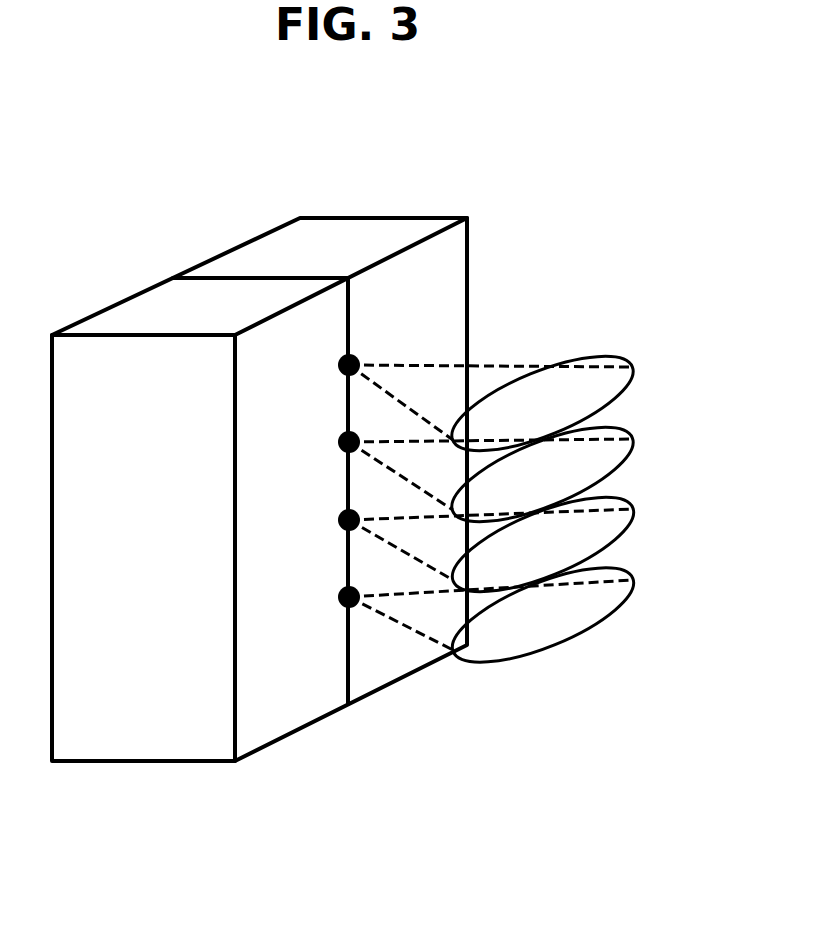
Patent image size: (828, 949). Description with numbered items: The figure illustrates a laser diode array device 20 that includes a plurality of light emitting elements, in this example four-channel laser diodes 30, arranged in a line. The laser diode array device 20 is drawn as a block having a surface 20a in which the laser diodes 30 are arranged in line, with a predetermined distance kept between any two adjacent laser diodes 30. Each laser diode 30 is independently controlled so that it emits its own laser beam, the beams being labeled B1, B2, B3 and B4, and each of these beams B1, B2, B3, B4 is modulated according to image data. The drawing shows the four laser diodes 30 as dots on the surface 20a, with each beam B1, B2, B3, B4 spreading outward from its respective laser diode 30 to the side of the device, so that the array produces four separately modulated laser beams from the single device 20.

The laser diode array device 20 is at (428, 196).
The surface 20a is at (307, 697).
The laser diode 30 is at (308, 496).
The laser beam B1 is at (590, 391).
The laser beam B2 is at (590, 464).
The laser beam B3 is at (589, 534).
The laser beam B4 is at (589, 605).